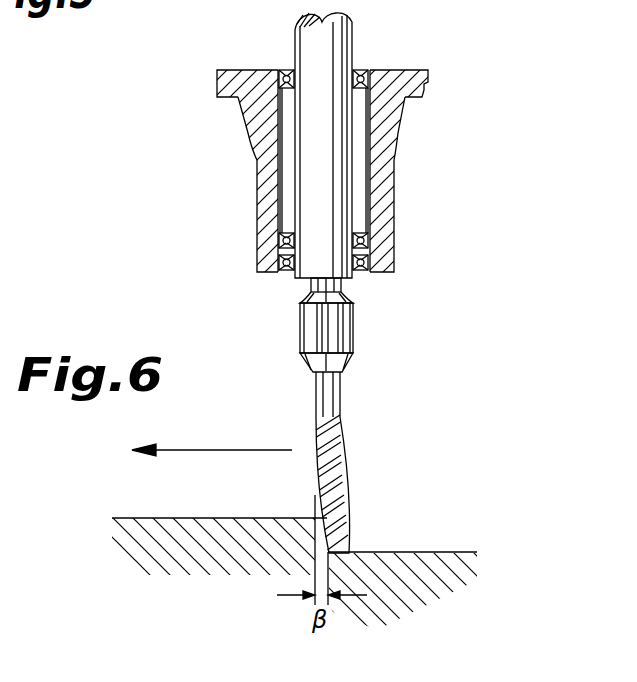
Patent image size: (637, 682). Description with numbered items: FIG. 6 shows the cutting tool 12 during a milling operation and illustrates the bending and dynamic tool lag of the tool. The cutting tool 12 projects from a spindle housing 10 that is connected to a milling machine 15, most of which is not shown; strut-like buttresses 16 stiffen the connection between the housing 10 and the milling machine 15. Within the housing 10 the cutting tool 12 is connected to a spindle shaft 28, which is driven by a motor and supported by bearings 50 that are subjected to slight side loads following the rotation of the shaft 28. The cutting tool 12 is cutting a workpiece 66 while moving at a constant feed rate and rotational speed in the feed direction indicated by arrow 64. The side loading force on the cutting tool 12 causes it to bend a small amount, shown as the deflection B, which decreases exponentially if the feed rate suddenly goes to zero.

The spindle housing 10 is at (324, 149).
The cutting tool 12 is at (331, 422).
The milling machine 15 is at (243, 70).
The buttresses 16 is at (249, 136).
The spindle shaft 28 is at (327, 202).
The bearings 50 is at (284, 70).
The arrow 64 is at (220, 448).
The workpiece 66 is at (408, 552).